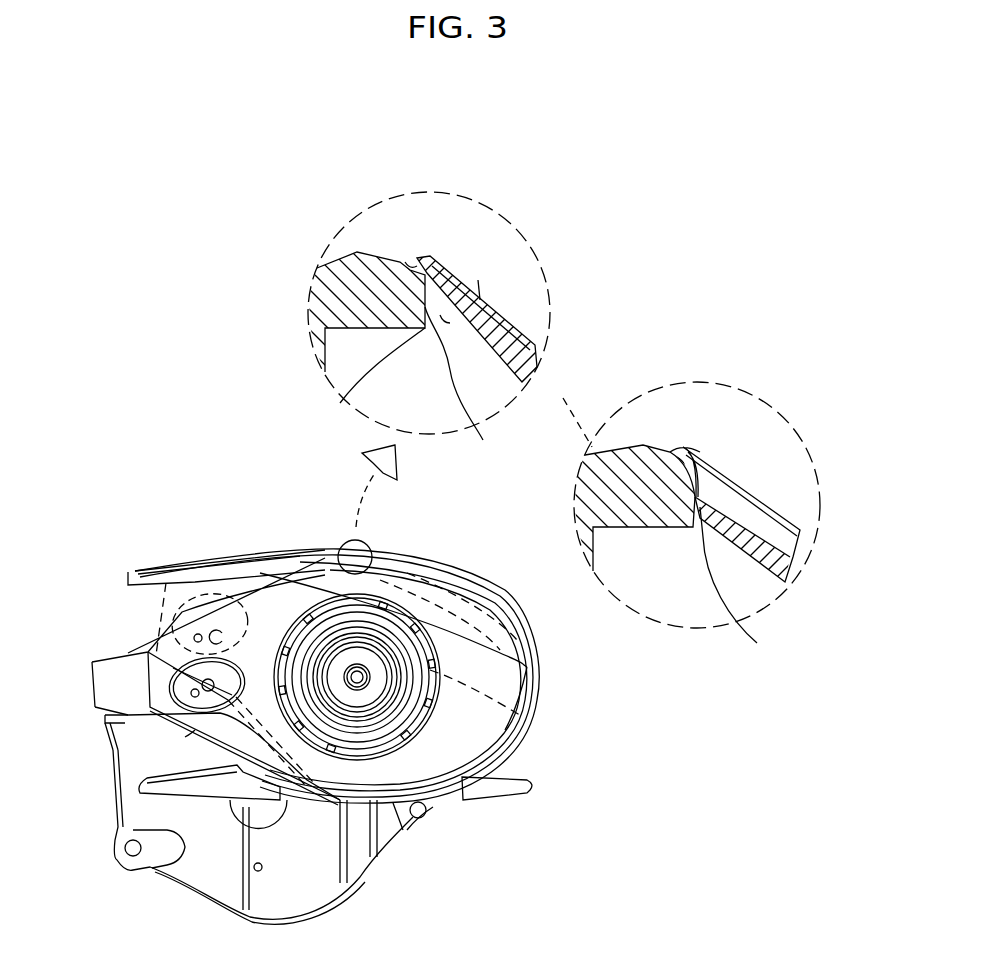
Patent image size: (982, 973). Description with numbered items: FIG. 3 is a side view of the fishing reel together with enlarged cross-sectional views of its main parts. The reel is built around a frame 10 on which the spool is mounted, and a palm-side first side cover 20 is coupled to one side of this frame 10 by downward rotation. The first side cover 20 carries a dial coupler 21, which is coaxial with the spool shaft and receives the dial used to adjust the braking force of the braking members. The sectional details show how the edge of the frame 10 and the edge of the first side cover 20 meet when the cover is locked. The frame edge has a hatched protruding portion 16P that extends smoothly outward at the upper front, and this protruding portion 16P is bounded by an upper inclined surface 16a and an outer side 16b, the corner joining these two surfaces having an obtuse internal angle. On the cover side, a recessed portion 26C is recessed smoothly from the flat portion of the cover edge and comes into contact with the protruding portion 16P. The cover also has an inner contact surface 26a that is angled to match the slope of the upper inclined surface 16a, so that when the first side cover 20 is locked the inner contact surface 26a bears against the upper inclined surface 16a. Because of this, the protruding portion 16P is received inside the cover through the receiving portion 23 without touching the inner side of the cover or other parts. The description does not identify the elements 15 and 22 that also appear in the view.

The frame 10 is at (352, 260).
The bracket plate 15 is at (217, 793).
The first side cover 20 is at (530, 343).
The dial coupler 21 is at (357, 700).
The thumb rest 22 is at (157, 608).
The receiving portion 23 is at (478, 290).
The protruding portion 16P is at (377, 307).
The upper inclined surface 16a is at (397, 372).
The outer side 16b is at (610, 485).
The inner contact surface 26a is at (410, 267).
The recessed portion 26C is at (432, 260).